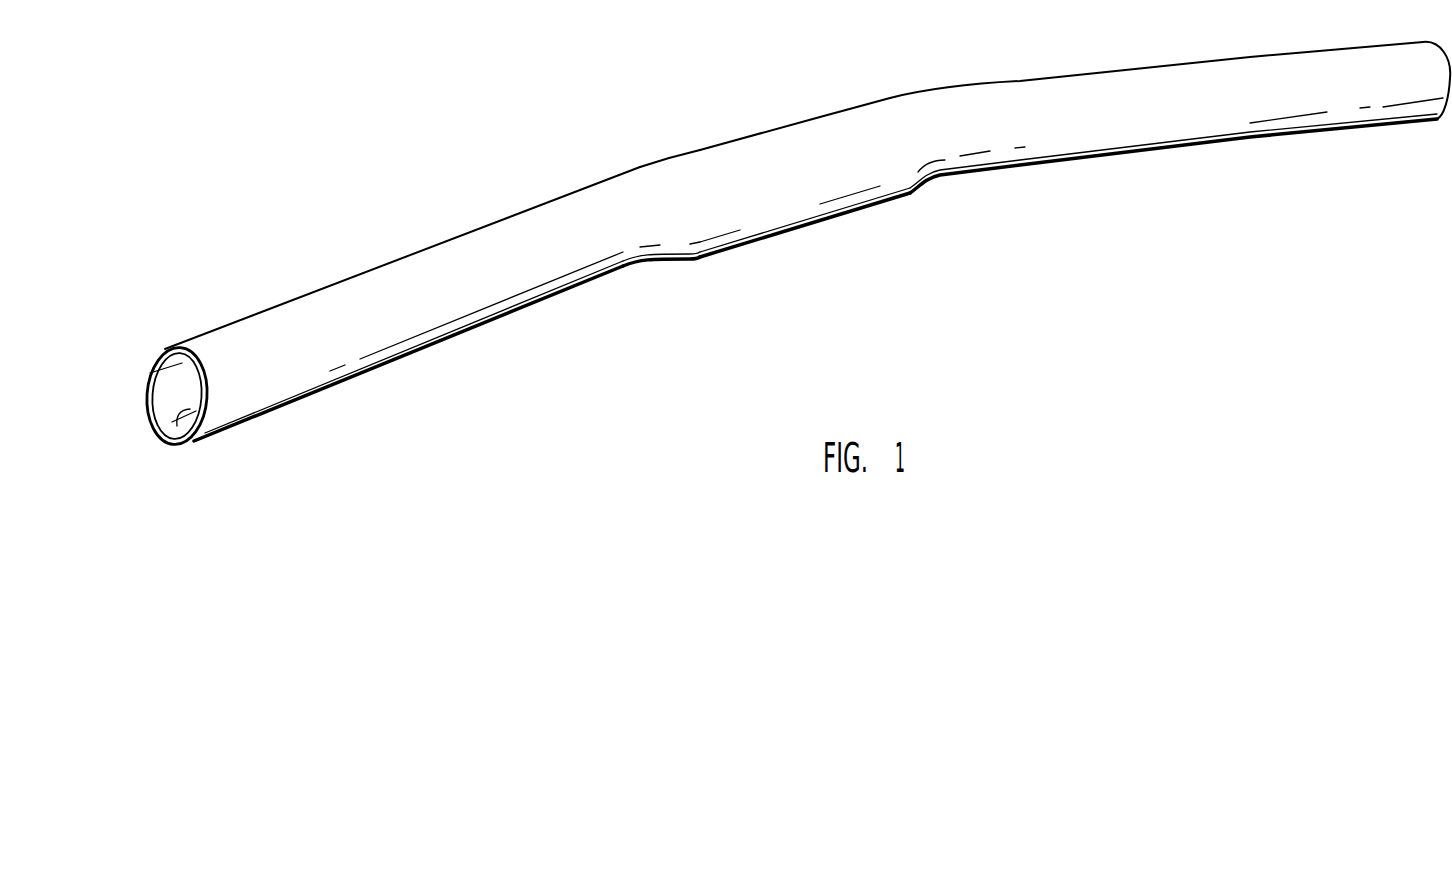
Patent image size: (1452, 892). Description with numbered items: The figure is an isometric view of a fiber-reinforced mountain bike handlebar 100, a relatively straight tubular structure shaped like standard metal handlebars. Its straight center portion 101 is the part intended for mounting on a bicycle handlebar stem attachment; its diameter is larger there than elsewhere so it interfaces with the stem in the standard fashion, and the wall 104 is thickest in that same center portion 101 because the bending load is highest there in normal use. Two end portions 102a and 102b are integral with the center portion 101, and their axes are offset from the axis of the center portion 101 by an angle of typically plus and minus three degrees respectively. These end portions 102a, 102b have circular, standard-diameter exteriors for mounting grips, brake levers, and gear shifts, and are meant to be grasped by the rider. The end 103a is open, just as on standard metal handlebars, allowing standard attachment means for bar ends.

The fiber-reinforced mountain bike handlebar 100 is at (345, 247).
The center portion 101 is at (776, 135).
The end portion 102a is at (400, 338).
The end portion 102b is at (1245, 97).
The end 103a is at (176, 428).
The wall 104 is at (691, 206).